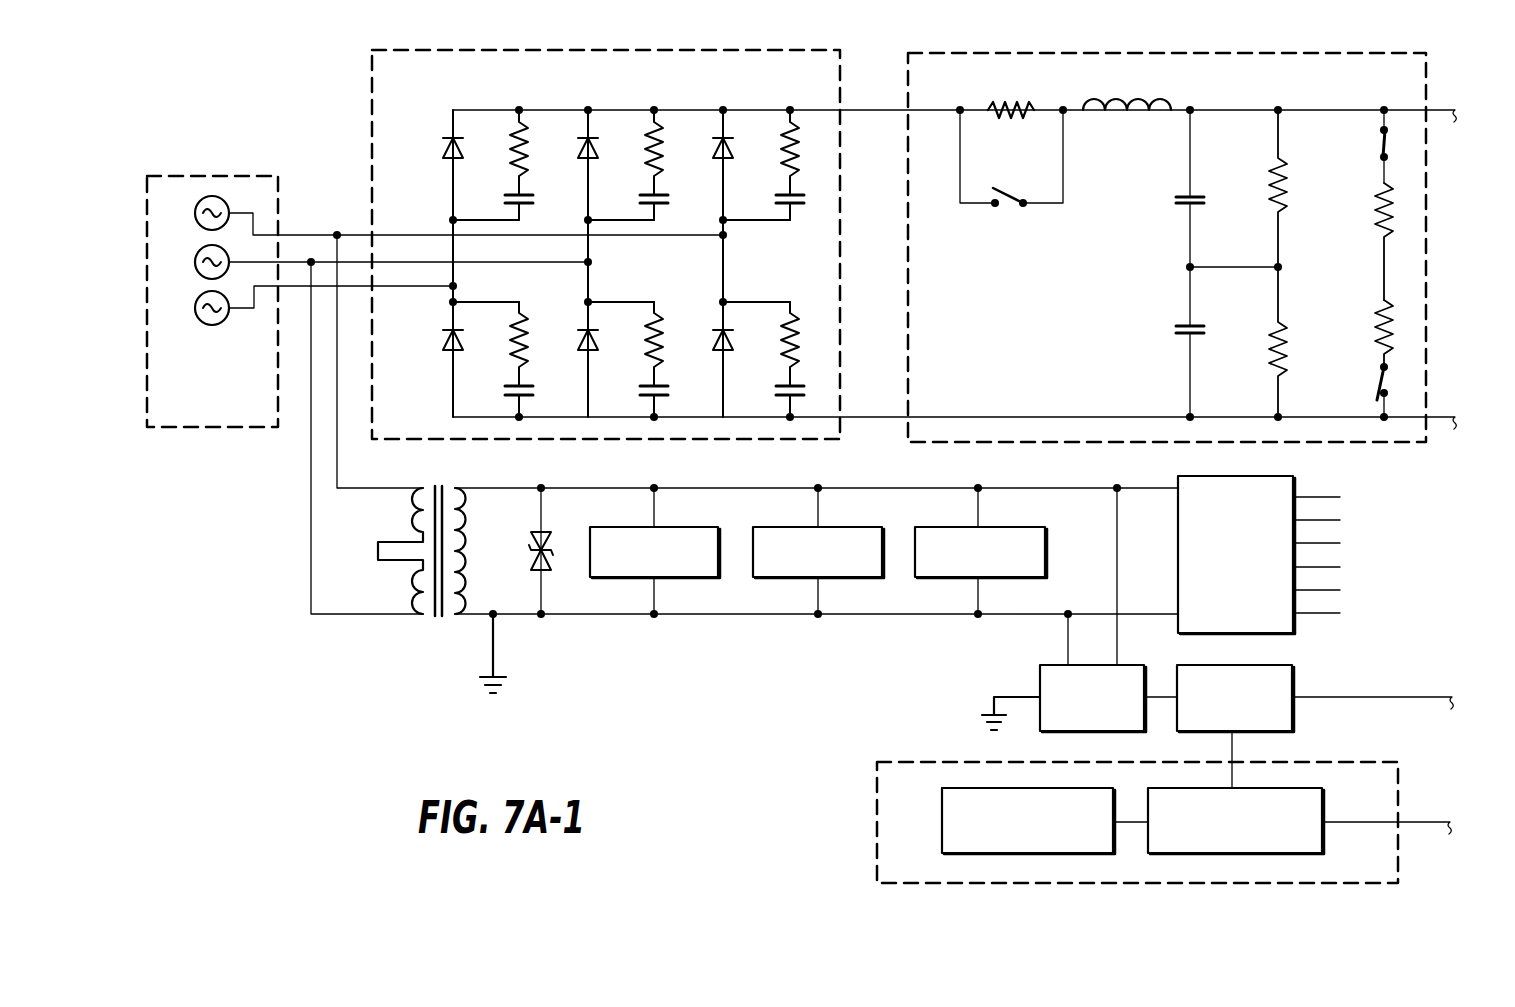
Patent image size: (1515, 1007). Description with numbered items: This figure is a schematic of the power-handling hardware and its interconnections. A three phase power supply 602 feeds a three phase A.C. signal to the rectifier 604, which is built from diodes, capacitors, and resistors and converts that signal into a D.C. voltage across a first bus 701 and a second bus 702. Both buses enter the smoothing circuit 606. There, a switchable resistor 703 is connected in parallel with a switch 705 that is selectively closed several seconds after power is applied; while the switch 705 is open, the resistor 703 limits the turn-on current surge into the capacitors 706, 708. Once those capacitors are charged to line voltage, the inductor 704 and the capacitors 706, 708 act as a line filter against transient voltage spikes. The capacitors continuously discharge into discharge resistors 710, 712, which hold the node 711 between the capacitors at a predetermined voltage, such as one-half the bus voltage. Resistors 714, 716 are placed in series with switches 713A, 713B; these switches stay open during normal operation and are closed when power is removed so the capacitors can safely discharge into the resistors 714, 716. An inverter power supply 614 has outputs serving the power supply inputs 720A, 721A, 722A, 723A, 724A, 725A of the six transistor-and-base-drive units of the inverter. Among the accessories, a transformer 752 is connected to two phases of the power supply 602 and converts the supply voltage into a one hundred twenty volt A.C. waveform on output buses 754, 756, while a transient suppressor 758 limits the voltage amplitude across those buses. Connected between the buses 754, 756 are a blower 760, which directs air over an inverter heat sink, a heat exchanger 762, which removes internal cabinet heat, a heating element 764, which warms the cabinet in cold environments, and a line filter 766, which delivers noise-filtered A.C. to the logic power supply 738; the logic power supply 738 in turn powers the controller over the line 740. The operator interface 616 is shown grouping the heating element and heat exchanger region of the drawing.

The three phase power supply 602 is at (205, 428).
The rectifier 604 is at (532, 440).
The smoothing circuit 606 is at (1167, 261).
The first bus 701 is at (869, 113).
The second bus 702 is at (868, 416).
The switchable resistor 703 is at (1002, 122).
The inductor 704 is at (1120, 124).
The switch 705 is at (1008, 216).
The capacitor 706 is at (1178, 201).
The capacitor 708 is at (1176, 330).
The discharge resistor 710 is at (1270, 177).
The node 711 is at (1180, 268).
The discharge resistor 712 is at (1268, 342).
The switch 713A is at (1375, 142).
The switch 713B is at (1378, 392).
The resistor 714 is at (1375, 215).
The resistor 716 is at (1375, 332).
The inverter power supply 614 is at (1273, 477).
The operator interface 616 is at (910, 760).
The power supply input 720A is at (1340, 497).
The power supply input 721A is at (1340, 520).
The power supply input 722A is at (1340, 543).
The power supply input 723A is at (1340, 567).
The power supply input 724A is at (1340, 590).
The power supply input 725A is at (1340, 613).
The logic power supply 738 is at (1292, 682).
The line 740 is at (1360, 697).
The transformer 752 is at (428, 648).
The output bus 754 is at (730, 489).
The output bus 756 is at (730, 616).
The transient suppressor 758 is at (545, 582).
The blower 760 is at (736, 520).
The heat exchanger 762 is at (900, 520).
The heating element 764 is at (1062, 520).
The line filter 766 is at (1040, 681).